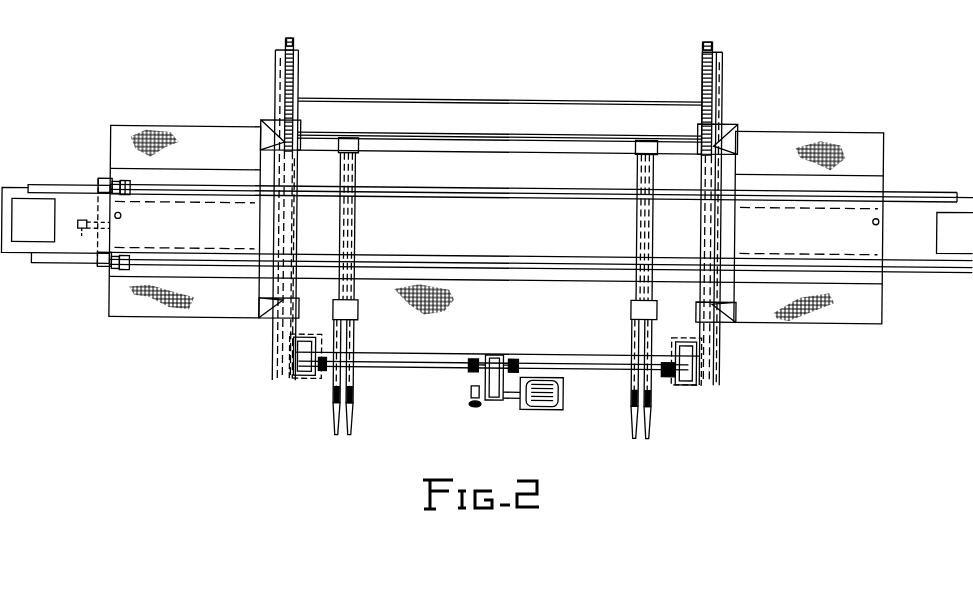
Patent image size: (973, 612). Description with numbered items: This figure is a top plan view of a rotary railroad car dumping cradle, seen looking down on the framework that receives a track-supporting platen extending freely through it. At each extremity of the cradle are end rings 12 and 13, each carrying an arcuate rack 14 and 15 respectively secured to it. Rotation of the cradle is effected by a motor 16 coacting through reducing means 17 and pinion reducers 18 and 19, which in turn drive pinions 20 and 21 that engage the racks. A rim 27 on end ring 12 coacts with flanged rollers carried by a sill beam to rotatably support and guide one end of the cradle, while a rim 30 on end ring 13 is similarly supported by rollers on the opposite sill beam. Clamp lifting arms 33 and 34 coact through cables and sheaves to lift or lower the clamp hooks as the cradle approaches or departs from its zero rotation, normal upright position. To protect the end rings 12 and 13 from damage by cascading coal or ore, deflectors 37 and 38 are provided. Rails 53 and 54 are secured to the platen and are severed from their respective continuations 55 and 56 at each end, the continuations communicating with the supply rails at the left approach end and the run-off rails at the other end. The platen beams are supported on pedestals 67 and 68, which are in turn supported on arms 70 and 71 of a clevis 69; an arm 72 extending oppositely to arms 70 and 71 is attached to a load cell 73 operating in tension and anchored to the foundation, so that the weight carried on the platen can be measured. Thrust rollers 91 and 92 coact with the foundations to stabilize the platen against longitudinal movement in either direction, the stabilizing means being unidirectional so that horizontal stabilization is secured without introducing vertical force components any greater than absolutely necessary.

The end ring 12 is at (298, 84).
The end ring 13 is at (722, 96).
The arcuate rack 14 is at (292, 42).
The arcuate rack 15 is at (711, 42).
The motor 16 is at (556, 392).
The reducing means 17 is at (500, 402).
The pinion reducer 18 is at (310, 378).
The pinion reducer 19 is at (694, 384).
The pinion 20 is at (278, 377).
The pinion 21 is at (715, 381).
The rim 27 is at (284, 48).
The rim 30 is at (716, 72).
The clamp lifting arm 33 is at (360, 414).
The clamp lifting arm 34 is at (634, 414).
The deflector 37 is at (258, 224).
The deflector 38 is at (737, 230).
The rail 53 is at (806, 252).
The rail 54 is at (832, 206).
The rail continuation 55 is at (92, 188).
The rail continuation 56 is at (903, 192).
The pedestal 67 is at (106, 272).
The pedestal 68 is at (116, 185).
The clevis 69 is at (104, 182).
The clevis arm 70 is at (122, 274).
The clevis arm 71 is at (131, 186).
The clevis arm 72 is at (96, 226).
The load cell 73 is at (82, 232).
The thrust roller 91 is at (122, 222).
The thrust roller 92 is at (873, 221).